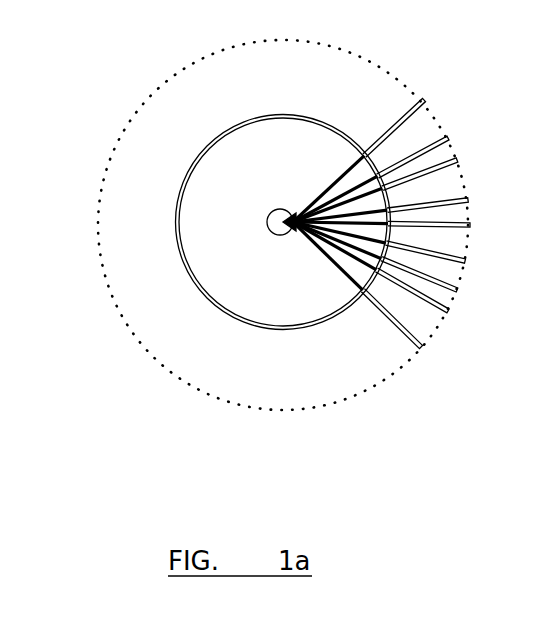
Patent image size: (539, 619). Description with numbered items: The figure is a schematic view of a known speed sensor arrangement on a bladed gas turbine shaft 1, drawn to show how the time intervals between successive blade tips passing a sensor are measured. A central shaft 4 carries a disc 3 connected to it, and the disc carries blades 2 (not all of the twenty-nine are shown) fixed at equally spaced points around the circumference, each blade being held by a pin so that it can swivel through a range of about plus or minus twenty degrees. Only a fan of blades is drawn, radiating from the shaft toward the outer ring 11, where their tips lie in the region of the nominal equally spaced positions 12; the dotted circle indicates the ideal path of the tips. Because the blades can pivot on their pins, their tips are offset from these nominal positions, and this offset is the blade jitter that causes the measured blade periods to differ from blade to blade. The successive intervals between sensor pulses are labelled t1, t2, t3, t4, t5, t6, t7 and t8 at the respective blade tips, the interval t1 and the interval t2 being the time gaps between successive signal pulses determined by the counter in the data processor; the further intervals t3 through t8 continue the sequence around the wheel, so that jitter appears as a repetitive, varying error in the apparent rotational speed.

The bladed gas turbine shaft 1 is at (150, 257).
The blades 2 is at (430, 108).
The disc 3 is at (215, 290).
The shaft 4 is at (276, 226).
The disc periphery 11 is at (361, 158).
The nominal equally spaced positions 12 is at (458, 288).
The time interval t1 is at (373, 160).
The time interval t2 is at (383, 177).
The tooth t3 is at (392, 190).
The tooth t4 is at (394, 211).
The tooth t5 is at (394, 239).
The tooth t6 is at (390, 259).
The tooth t7 is at (384, 274).
The tooth t8 is at (374, 288).